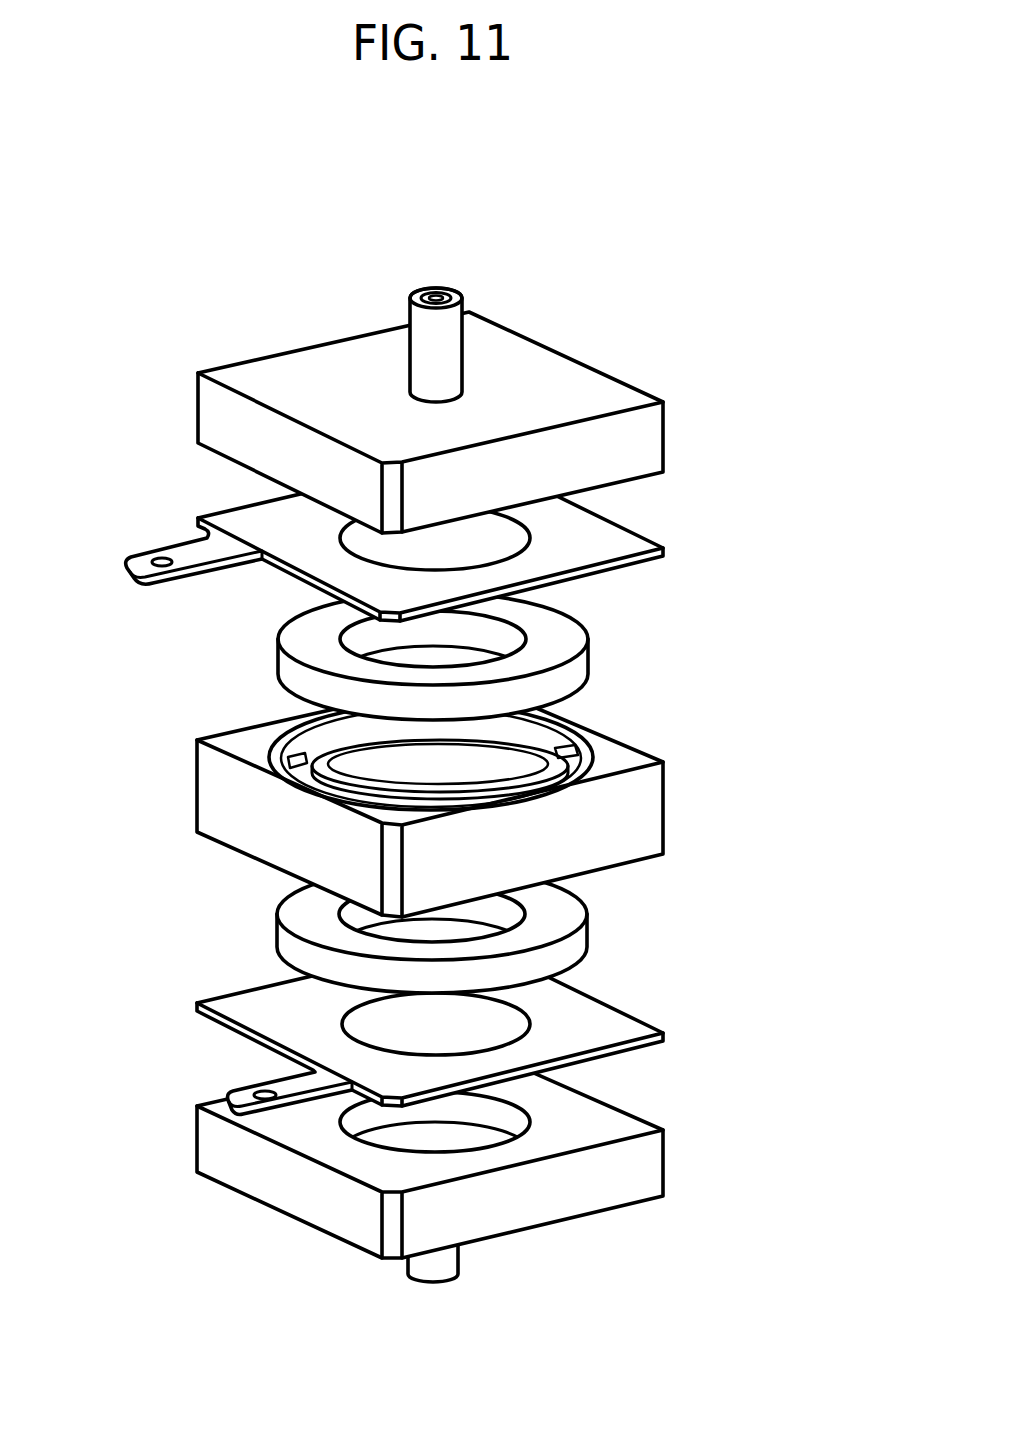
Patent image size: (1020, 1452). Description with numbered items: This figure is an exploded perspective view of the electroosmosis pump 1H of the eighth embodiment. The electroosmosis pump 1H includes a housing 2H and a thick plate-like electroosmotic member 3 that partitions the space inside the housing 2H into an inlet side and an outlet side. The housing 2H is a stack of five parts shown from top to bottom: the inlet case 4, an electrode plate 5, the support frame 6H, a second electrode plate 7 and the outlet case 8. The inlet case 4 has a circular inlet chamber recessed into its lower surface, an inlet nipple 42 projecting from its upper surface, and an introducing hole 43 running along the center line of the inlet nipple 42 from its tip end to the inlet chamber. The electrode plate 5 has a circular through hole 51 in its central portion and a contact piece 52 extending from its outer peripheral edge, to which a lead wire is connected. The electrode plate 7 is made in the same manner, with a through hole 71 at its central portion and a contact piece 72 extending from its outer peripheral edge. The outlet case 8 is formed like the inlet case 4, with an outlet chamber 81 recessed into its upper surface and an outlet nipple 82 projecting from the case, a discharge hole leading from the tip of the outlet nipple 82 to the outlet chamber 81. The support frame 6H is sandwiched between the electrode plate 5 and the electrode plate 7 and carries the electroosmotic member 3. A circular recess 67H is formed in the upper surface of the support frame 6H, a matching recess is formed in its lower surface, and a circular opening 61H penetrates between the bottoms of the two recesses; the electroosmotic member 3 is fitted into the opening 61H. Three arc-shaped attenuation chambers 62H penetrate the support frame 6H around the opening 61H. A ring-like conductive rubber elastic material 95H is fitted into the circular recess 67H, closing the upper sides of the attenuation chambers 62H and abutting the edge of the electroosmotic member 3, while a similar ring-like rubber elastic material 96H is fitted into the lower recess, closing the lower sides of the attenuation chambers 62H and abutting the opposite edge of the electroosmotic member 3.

The electroosmosis pump 1H is at (619, 254).
The housing 2H is at (748, 391).
The electroosmotic member 3 is at (382, 787).
The inlet case 4 is at (650, 443).
The inlet nipple 42 is at (399, 304).
The introducing hole 43 is at (433, 296).
The electrode plate 5 is at (389, 537).
The through hole 51 is at (373, 542).
The contact piece 52 is at (138, 560).
The rubber elastic material 95H is at (295, 617).
The support frame 6H is at (432, 806).
The opening 61H is at (258, 755).
The attenuation chambers 62H is at (560, 762).
The circular recess 67H is at (323, 725).
The rubber elastic material 96H is at (292, 952).
The electrode plate 7 is at (436, 1027).
The through hole 71 is at (372, 1024).
The contact piece 72 is at (232, 1093).
The outlet case 8 is at (459, 1201).
The outlet chamber 81 is at (382, 1138).
The outlet nipple 82 is at (433, 1272).